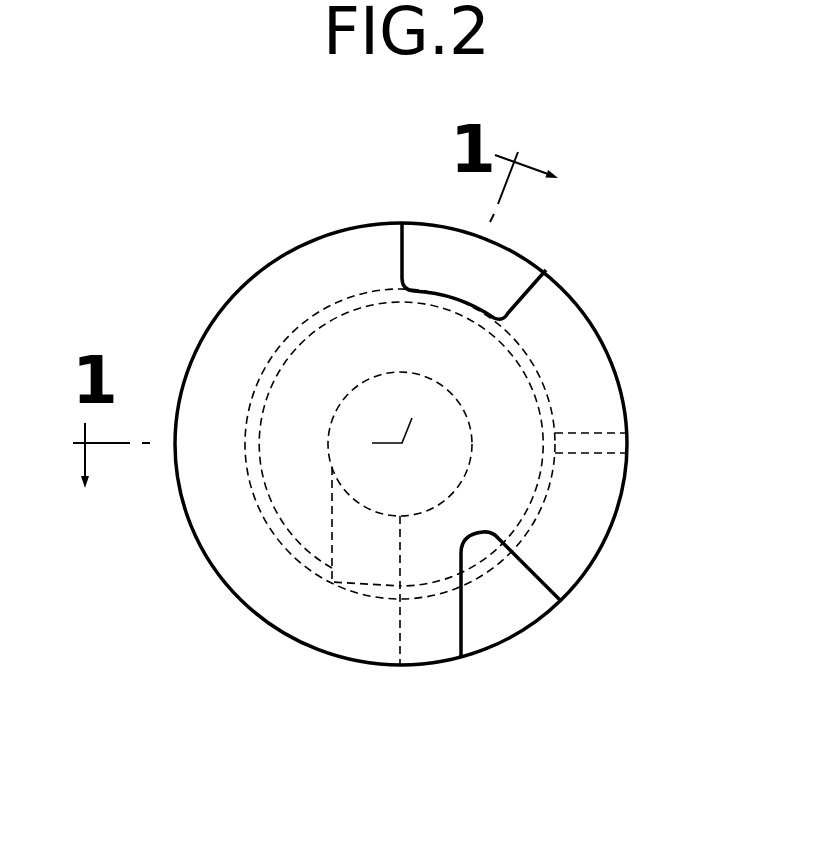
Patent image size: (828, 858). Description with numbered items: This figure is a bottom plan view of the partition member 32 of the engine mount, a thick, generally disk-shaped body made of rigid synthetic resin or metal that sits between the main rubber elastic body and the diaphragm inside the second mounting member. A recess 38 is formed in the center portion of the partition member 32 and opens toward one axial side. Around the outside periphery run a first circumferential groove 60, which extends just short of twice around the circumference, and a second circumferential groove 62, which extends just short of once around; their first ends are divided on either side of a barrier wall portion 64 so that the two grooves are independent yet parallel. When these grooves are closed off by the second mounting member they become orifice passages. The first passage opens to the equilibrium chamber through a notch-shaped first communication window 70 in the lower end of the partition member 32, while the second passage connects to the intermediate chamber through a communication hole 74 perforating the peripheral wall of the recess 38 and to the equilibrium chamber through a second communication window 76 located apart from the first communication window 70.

The partition member 32 is at (300, 278).
The recess 38 is at (343, 415).
The first circumferential groove 60 is at (540, 492).
The second circumferential groove 62 is at (248, 498).
The barrier wall portion 64 is at (586, 442).
The first communication window 70 is at (462, 593).
The communication hole 74 is at (333, 541).
The second communication window 76 is at (525, 296).